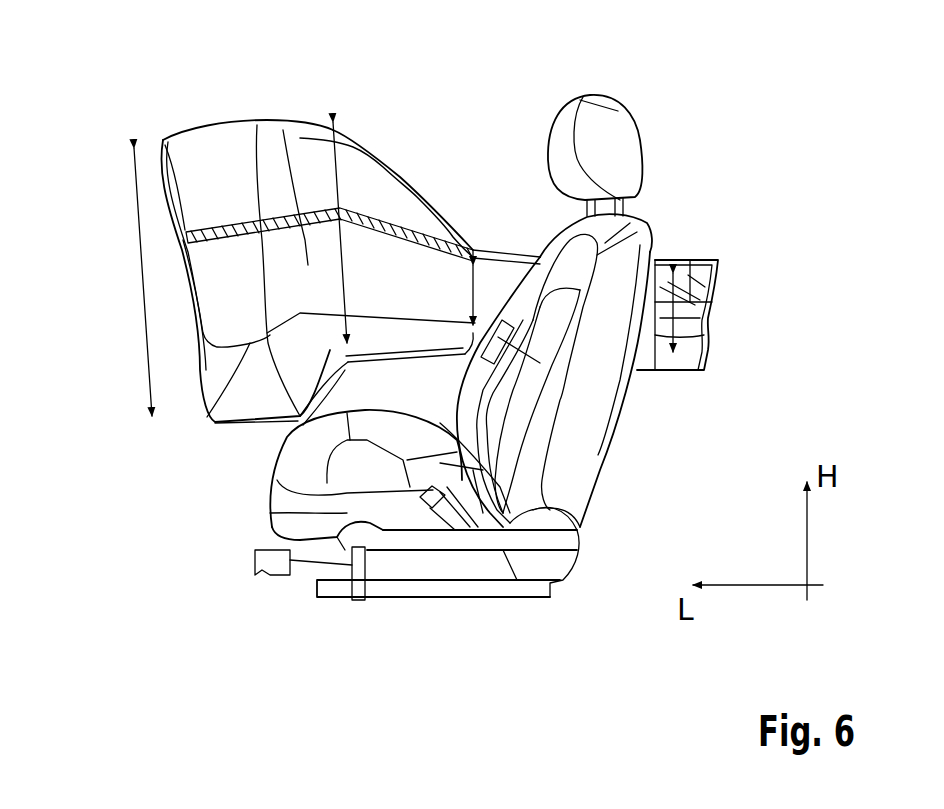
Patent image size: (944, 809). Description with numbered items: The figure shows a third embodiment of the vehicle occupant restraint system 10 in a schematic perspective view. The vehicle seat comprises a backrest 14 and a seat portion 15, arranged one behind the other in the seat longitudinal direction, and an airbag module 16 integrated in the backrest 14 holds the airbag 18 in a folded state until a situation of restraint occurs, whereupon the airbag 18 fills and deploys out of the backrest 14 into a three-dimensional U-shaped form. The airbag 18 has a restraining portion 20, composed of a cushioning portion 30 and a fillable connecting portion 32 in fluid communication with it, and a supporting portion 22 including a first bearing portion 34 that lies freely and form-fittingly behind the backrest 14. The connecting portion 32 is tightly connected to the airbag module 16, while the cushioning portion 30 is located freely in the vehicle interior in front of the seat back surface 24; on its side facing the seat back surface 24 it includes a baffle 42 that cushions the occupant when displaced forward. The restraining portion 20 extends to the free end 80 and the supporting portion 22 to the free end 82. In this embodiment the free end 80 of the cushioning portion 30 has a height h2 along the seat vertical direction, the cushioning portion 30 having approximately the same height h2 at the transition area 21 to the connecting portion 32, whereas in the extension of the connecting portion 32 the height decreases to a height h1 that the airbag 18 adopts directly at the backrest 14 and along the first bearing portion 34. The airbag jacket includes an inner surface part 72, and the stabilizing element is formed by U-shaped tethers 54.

The vehicle occupant restraint system 10 is at (676, 136).
The backrest 14 is at (580, 427).
The seat portion 15 is at (270, 513).
The airbag module 16 is at (500, 337).
The airbag 18 is at (124, 109).
The restraining portion 20 is at (249, 108).
The transition area 21 is at (305, 150).
The supporting portion 22 is at (741, 255).
The seat back surface 24 is at (452, 490).
The cushioning portion 30 is at (207, 293).
The connecting portion 32 is at (438, 167).
The first bearing portion 34 is at (690, 320).
The baffle 42 is at (307, 257).
The tethers 54 is at (250, 233).
The inner surface part 72 is at (380, 200).
The free end 80 is at (163, 133).
The free end 82 is at (708, 287).
The height h1 is at (492, 335).
The height h2 is at (135, 268).